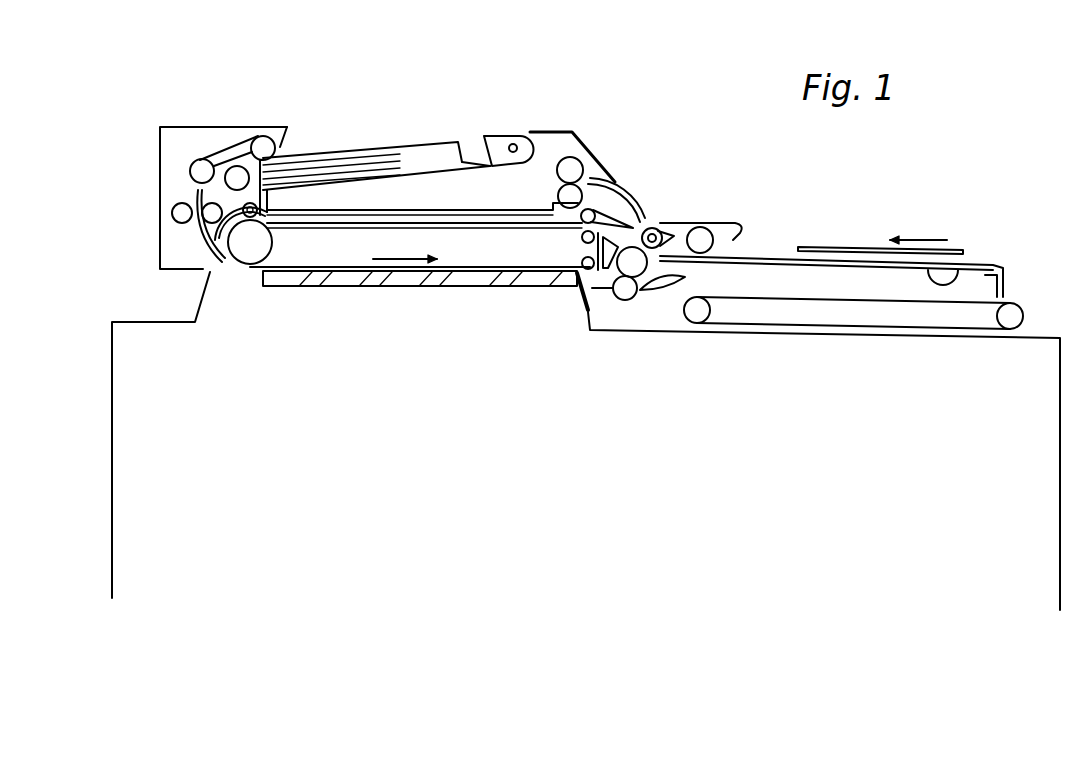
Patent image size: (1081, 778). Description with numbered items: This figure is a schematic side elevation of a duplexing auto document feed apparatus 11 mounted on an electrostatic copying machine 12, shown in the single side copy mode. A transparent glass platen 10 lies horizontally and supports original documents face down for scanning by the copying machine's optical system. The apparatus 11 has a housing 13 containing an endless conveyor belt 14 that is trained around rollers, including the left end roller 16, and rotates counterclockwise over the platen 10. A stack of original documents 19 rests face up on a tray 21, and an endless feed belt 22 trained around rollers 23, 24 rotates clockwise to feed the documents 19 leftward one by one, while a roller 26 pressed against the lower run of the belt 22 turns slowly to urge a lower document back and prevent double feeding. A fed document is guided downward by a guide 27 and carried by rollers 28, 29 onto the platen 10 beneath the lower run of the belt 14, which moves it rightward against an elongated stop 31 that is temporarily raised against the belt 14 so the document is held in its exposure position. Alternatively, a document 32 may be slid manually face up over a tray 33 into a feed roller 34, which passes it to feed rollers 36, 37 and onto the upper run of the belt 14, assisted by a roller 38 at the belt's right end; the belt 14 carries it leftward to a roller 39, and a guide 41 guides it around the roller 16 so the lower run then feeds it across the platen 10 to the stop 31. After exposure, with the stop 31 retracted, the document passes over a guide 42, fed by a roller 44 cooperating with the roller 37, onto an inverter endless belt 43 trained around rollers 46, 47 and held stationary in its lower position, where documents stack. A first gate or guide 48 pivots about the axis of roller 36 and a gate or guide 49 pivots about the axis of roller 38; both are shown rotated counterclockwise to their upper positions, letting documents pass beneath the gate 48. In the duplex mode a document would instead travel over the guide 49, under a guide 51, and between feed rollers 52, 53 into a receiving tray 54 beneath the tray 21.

The transparent glass platen 10 is at (405, 288).
The duplexing auto document feed apparatus 11 is at (100, 96).
The electrostatic copying machine 12 is at (112, 531).
The housing 13 is at (200, 127).
The endless conveyor belt 14 is at (513, 232).
The roller 16 is at (250, 258).
The original documents 19 is at (372, 160).
The tray 21 is at (432, 165).
The endless feed belt 22 is at (237, 166).
The roller 23 is at (268, 140).
The roller 24 is at (190, 172).
The roller 26 is at (233, 142).
The guide 27 is at (208, 240).
The roller 28 is at (205, 218).
The roller 29 is at (172, 213).
The elongated stop 31 is at (575, 300).
The document 32 is at (850, 247).
The tray 33 is at (958, 266).
The feed roller 34 is at (737, 226).
The feed roller 36 is at (657, 230).
The feed roller 37 is at (637, 277).
The roller 38 is at (594, 210).
The roller 39 is at (258, 218).
The guide 41 is at (237, 262).
The guide 42 is at (668, 292).
The inverter endless belt 43 is at (900, 329).
The roller 44 is at (613, 297).
The roller 46 is at (697, 322).
The roller 47 is at (1022, 314).
The first gate or guide 48 is at (703, 228).
The gate or guide 49 is at (618, 206).
The guide 51 is at (625, 190).
The feed roller 52 is at (578, 185).
The feed roller 53 is at (558, 165).
The receiving tray 54 is at (467, 214).